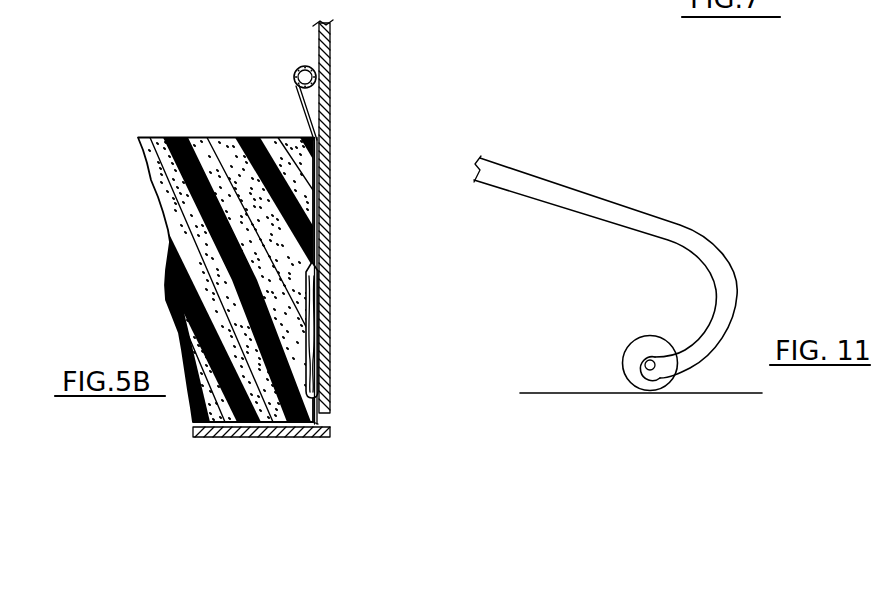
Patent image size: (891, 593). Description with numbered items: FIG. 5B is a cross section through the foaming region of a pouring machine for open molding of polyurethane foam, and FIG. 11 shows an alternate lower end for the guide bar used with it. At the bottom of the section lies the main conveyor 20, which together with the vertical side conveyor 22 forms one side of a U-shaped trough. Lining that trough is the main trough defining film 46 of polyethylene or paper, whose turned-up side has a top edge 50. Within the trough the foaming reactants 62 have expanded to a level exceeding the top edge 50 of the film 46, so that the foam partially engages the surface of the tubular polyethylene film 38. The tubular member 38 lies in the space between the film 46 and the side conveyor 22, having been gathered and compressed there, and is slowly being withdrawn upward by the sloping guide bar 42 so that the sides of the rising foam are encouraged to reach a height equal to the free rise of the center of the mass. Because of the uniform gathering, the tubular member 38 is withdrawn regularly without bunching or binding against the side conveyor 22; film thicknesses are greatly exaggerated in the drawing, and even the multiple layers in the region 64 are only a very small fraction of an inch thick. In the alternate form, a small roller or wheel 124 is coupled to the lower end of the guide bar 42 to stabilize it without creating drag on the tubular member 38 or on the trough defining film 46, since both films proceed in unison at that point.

In FIG. 5B, the main conveyor 20 is at (333, 432).
In FIG. 5B, the side conveyor 22 is at (331, 41).
In FIG. 5B, the tubular polyethylene film 38 is at (296, 88).
In FIG. 5B, the guide bar 42 is at (318, 74).
In FIG. 11, the guide bar 42 is at (550, 184).
In FIG. 5B, the main trough defining film 46 is at (322, 424).
In FIG. 5B, the top edge of the film 50 is at (316, 200).
In FIG. 5B, the foaming reactants 62 is at (191, 142).
In FIG. 5B, the region of multiple film thickness 64 is at (311, 301).
In FIG. 11, the roller or wheel 124 is at (638, 343).